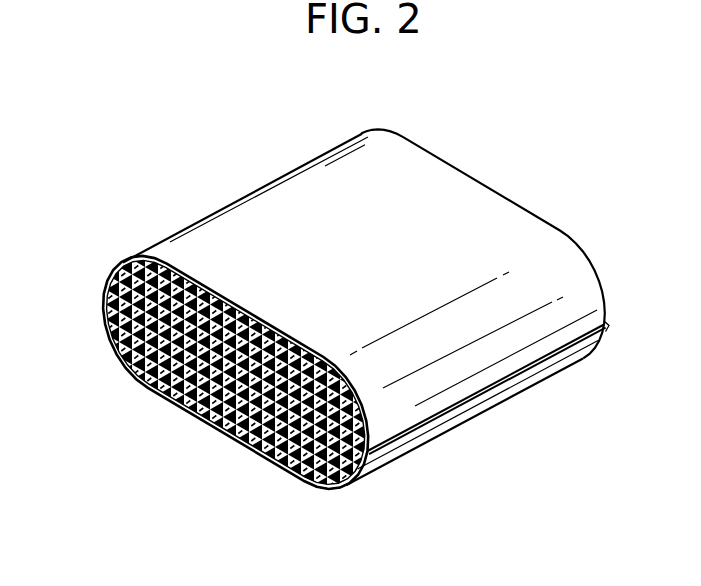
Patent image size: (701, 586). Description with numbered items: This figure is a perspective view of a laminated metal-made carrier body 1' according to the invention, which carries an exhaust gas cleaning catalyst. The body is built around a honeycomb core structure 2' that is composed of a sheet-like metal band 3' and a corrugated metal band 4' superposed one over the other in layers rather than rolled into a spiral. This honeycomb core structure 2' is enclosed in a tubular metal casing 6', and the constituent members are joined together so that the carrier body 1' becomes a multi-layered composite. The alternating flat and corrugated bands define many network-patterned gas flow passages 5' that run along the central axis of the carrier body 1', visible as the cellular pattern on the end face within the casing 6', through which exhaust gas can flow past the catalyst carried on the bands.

The metal-made carrier body 1' is at (364, 283).
The honeycomb core structure 2' is at (203, 372).
The sheet-like metal band 3' is at (236, 372).
The corrugated metal band 4' is at (236, 381).
The gas flow passages 5' is at (315, 491).
The tubular metal casing 6' is at (398, 303).